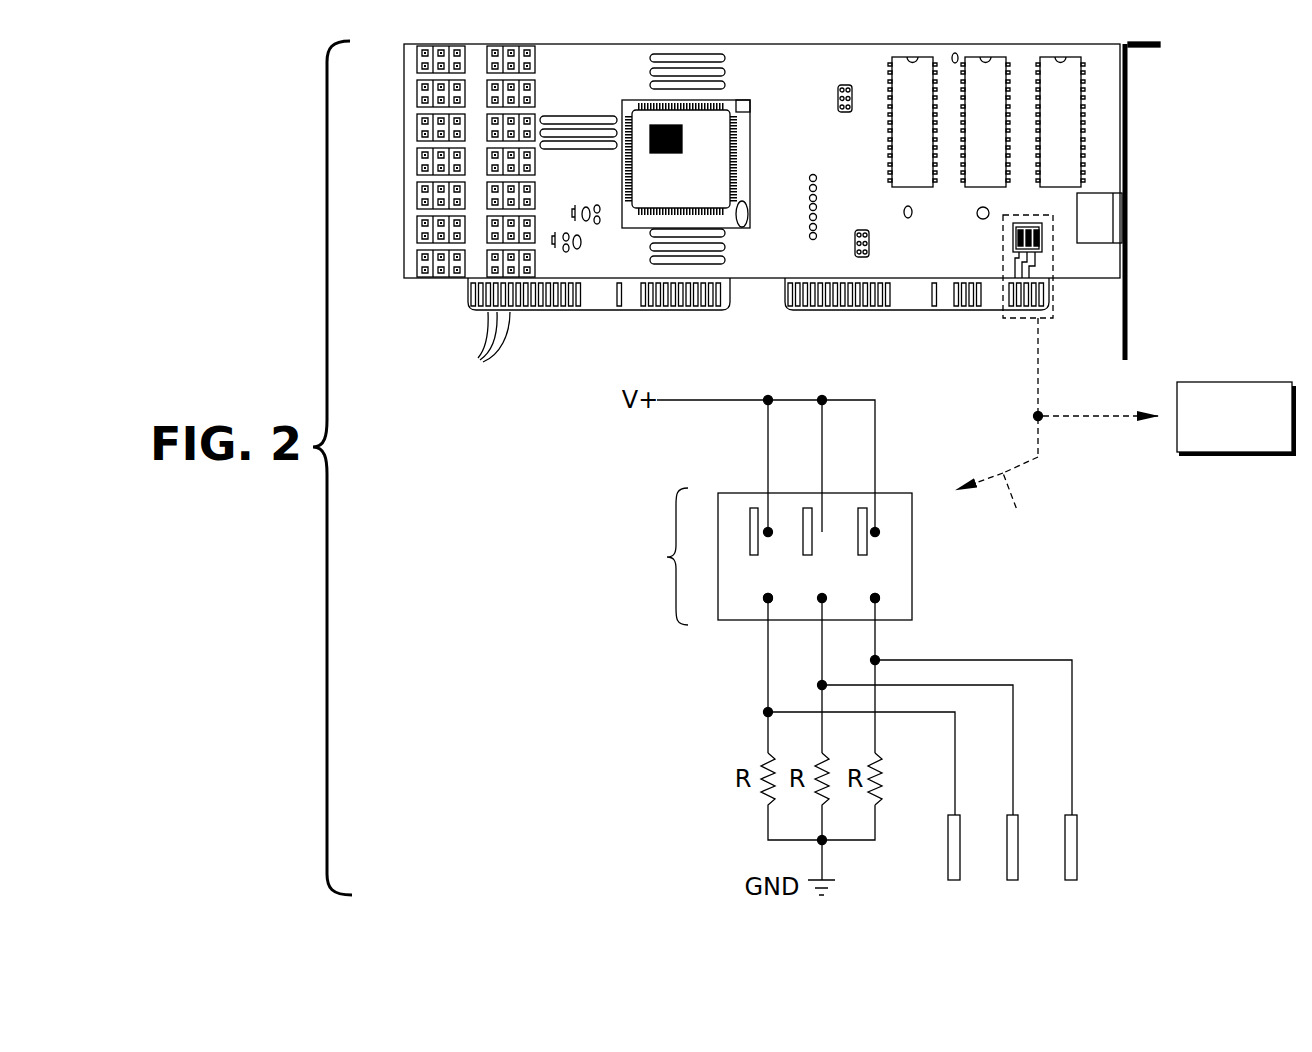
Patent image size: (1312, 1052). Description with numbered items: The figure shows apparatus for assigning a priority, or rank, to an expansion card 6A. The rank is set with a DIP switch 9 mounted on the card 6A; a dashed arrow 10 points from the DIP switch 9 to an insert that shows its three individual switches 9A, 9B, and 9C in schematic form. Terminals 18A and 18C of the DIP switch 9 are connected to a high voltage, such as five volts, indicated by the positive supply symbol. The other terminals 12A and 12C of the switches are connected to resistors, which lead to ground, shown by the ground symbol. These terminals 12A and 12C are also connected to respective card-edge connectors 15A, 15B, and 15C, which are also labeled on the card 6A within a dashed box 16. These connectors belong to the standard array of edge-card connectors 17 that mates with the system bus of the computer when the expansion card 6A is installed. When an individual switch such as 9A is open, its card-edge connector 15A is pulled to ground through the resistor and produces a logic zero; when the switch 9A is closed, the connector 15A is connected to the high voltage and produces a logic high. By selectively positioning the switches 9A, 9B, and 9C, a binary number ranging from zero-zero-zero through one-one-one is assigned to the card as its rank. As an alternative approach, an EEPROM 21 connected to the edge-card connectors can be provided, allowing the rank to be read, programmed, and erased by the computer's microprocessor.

The expansion card 6A is at (1190, 146).
The DIP switch 9 is at (986, 242).
The individual switch 9A is at (758, 478).
The individual switch 9B is at (806, 478).
The individual switch 9C is at (859, 478).
The dashed arrow 10 is at (1006, 494).
The terminal 12A is at (765, 598).
The terminal 12C is at (878, 597).
The card-edge connector 15A is at (1013, 311).
The card-edge connector 15B is at (1020, 311).
The card-edge connector 15C is at (1028, 311).
The dashed box 16 is at (1053, 300).
The array of edge-card connectors 17 is at (478, 359).
The terminal 18A is at (756, 546).
The terminal 18C is at (879, 534).
The EEPROM 21 is at (1258, 382).